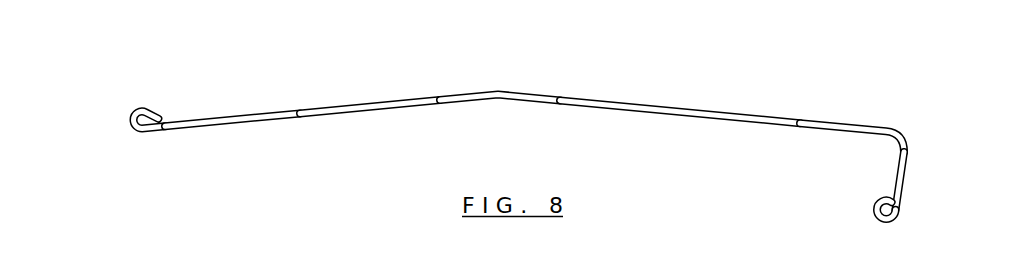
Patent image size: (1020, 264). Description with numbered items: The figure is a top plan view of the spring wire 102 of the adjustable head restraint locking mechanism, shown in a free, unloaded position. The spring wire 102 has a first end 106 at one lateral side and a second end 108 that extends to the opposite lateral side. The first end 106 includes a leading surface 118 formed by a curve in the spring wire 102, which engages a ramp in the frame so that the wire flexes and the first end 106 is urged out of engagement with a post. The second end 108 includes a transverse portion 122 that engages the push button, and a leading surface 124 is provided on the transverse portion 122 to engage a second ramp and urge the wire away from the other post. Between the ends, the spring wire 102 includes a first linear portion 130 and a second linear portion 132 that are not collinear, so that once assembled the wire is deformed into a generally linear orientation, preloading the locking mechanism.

The spring wire 102 is at (503, 71).
The first end 106 is at (245, 116).
The second end 108 is at (862, 126).
The leading surface 118 is at (127, 122).
The transverse portion 122 is at (896, 178).
The leading surface 124 is at (874, 214).
The first linear portion 130 is at (316, 116).
The second linear portion 132 is at (753, 115).